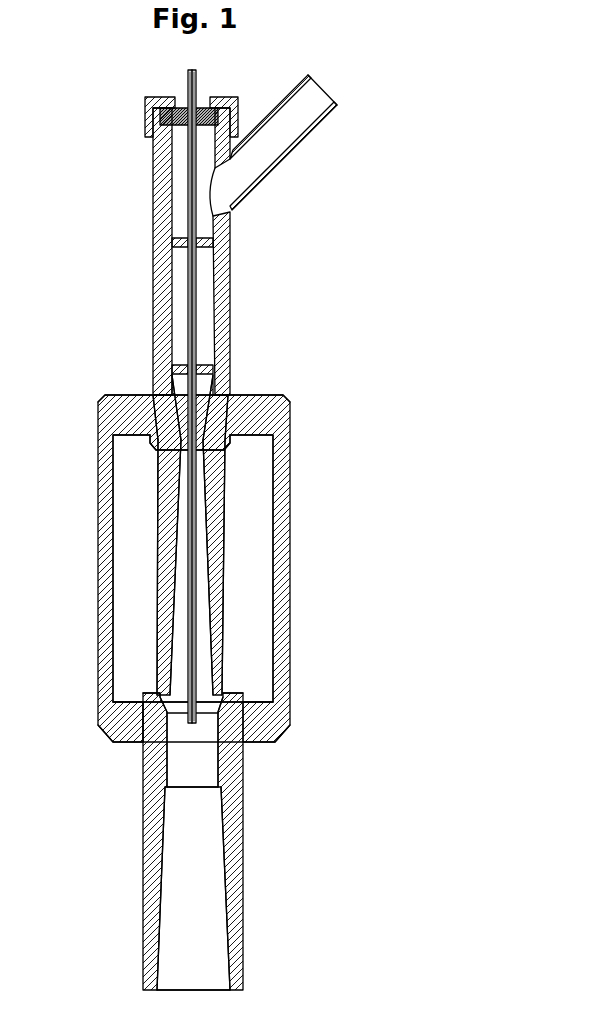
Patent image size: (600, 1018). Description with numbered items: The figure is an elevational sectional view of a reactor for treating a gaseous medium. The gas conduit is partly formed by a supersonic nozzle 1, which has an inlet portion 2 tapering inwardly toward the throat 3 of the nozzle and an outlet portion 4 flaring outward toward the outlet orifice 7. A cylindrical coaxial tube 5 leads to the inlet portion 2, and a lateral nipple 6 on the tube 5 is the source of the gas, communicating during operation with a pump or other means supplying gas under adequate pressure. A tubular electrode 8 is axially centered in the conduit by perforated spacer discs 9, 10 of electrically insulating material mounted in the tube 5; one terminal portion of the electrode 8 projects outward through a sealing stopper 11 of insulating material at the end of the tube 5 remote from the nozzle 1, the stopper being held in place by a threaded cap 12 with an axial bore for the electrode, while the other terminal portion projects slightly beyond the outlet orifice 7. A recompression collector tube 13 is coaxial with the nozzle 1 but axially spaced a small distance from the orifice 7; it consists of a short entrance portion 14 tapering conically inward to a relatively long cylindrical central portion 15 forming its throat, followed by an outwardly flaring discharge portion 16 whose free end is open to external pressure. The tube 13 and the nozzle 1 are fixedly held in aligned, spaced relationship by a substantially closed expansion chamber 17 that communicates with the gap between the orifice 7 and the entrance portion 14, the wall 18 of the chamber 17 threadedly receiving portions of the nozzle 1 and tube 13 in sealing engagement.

The supersonic nozzle 1 is at (216, 497).
The inlet portion 2 is at (218, 387).
The throat 3 is at (226, 452).
The outlet portion 4 is at (212, 597).
The cylindrical coaxial tube 5 is at (222, 268).
The lateral nipple 6 is at (280, 162).
The outlet orifice 7 is at (228, 712).
The tubular electrode 8 is at (196, 650).
The perforated spacer disc 9 is at (172, 240).
The perforated spacer disc 10 is at (175, 370).
The sealing stopper 11 is at (150, 118).
The threaded cap 12 is at (145, 99).
The recompression collector tube 13 is at (145, 798).
The entrance portion 14 is at (150, 712).
The cylindrical central portion 15 is at (233, 768).
The discharge portion 16 is at (228, 865).
The expansion chamber 17 is at (132, 582).
The wall 18 is at (105, 452).